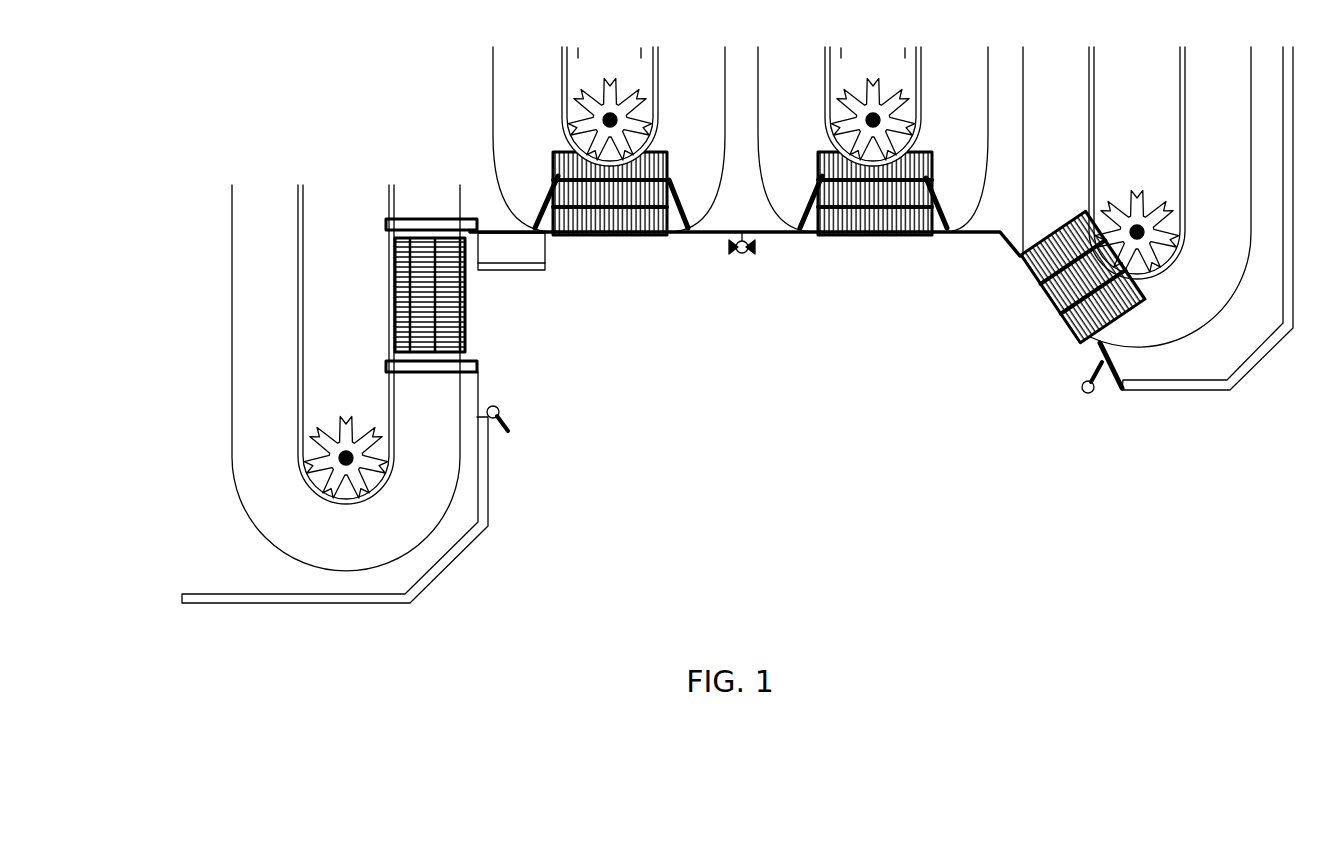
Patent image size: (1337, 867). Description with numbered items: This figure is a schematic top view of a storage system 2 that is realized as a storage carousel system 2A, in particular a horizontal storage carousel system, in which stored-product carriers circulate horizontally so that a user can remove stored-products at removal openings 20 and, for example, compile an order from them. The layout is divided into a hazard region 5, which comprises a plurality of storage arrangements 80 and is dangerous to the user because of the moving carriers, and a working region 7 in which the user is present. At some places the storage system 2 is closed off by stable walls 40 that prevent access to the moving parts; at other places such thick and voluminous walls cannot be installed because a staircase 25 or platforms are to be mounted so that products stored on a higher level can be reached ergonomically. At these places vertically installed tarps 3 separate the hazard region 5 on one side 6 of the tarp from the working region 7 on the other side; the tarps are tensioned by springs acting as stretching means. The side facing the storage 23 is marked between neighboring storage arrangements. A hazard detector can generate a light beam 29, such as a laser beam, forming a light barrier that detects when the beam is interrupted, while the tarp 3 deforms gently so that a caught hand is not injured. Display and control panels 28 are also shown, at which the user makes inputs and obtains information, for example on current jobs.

The storage system 2 is at (1092, 445).
The storage carousel system 2A is at (1138, 449).
The tarp 3 is at (486, 393).
The hazard region 5 is at (509, 167).
The one side 6 is at (518, 217).
The working region 7 is at (742, 307).
The removal opening 20 is at (603, 250).
The side facing the storage 23 is at (727, 177).
The staircase 25 is at (511, 251).
The display and control panel 28 is at (732, 259).
The light beam 29 is at (481, 365).
The wall 40 is at (444, 565).
The storage arrangement 80 is at (209, 409).